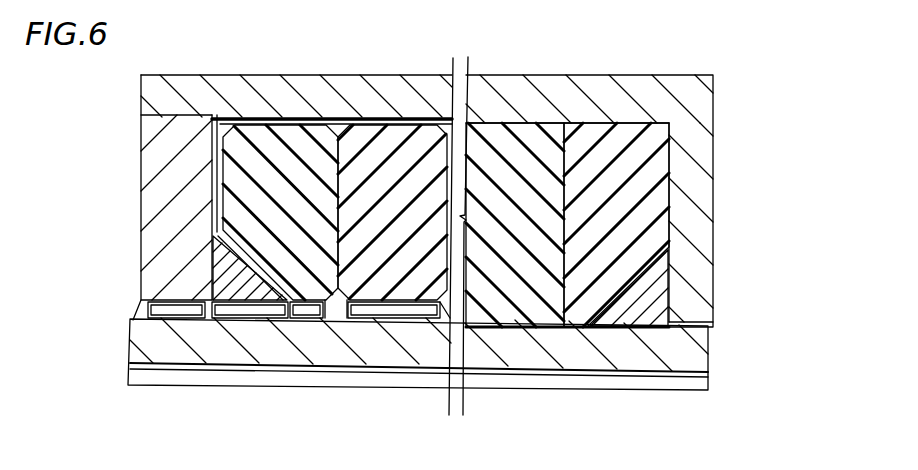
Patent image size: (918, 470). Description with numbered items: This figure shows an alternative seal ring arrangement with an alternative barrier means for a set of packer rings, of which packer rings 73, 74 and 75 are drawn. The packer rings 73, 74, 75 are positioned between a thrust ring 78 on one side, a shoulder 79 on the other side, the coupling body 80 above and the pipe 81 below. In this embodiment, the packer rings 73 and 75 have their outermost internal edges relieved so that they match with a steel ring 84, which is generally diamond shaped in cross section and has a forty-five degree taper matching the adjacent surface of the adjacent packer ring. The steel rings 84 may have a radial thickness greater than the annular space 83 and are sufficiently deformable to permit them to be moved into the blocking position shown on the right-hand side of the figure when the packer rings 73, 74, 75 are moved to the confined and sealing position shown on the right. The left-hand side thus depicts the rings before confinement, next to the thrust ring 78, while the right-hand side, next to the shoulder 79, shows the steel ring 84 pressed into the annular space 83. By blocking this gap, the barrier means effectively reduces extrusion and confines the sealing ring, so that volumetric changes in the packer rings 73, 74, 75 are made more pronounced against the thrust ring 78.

The packer ring 73 is at (276, 140).
The packer ring 74 is at (398, 145).
The packer ring 75 is at (523, 136).
The thrust ring 78 is at (153, 208).
The shoulder 79 is at (672, 200).
The coupling body 80 is at (589, 94).
The pipe 81 is at (538, 355).
The annular space 83 is at (705, 325).
The steel ring 84 is at (242, 285).